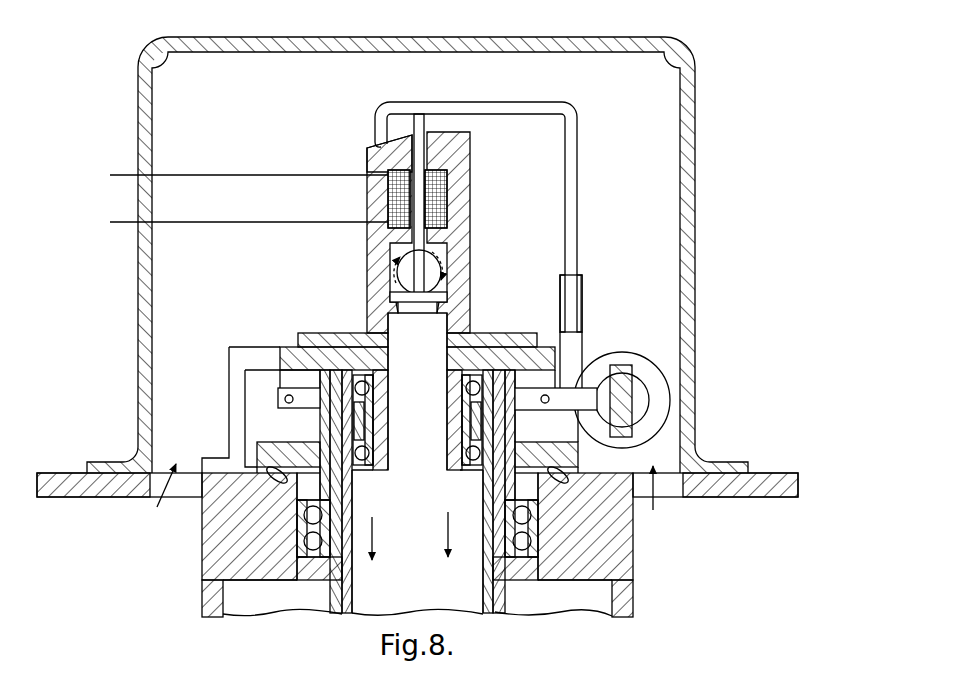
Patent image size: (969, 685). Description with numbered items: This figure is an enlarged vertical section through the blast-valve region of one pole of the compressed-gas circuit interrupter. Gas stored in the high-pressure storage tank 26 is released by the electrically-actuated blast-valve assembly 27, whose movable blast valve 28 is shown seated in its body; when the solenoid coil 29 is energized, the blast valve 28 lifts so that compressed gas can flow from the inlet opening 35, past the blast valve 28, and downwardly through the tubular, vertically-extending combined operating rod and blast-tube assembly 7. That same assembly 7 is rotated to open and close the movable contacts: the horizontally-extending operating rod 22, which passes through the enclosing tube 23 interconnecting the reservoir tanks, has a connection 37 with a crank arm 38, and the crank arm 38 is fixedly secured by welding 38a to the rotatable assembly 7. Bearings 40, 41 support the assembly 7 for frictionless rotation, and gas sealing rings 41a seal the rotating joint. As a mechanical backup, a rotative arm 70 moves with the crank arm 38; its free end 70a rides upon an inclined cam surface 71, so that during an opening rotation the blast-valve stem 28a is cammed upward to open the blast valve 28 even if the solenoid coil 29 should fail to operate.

The combined operating rod and blast-tube assembly 7 is at (495, 594).
The operating rod 22 is at (628, 366).
The enclosing tube 23 is at (616, 448).
The high-pressure storage tank 26 is at (653, 564).
The blast-valve assembly 27 is at (328, 291).
The blast valve 28 is at (444, 297).
The blast-valve stem 28a is at (462, 148).
The solenoid coil 29 is at (448, 182).
The inlet opening 35 is at (438, 253).
The connection 37 is at (599, 362).
The crank arm 38 is at (562, 412).
The welding 38a is at (518, 385).
The bearing 40 is at (352, 484).
The bearing 41 is at (298, 556).
The gas sealing ring 41a is at (276, 468).
The rotative arm 70 is at (578, 158).
The free end 70a is at (380, 146).
The inclined cam surface 71 is at (372, 146).